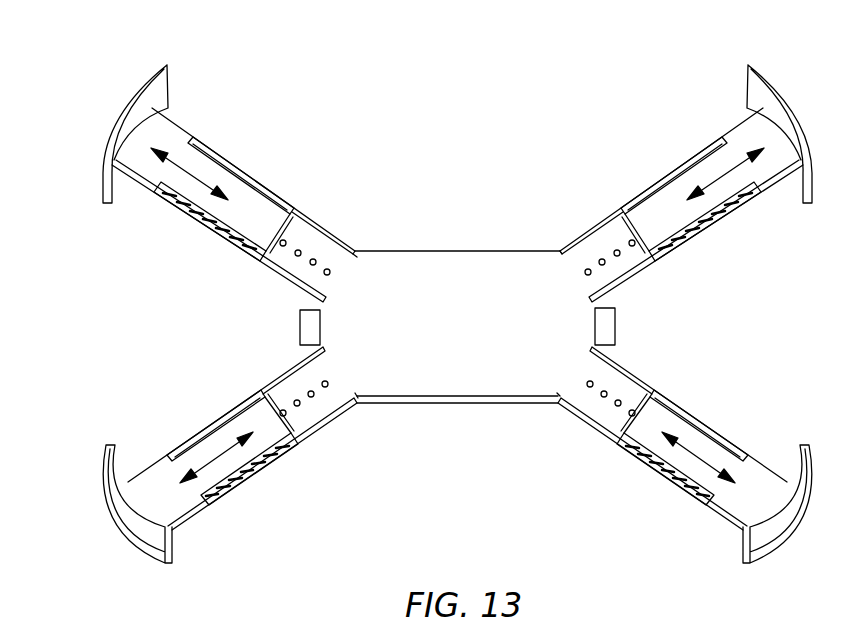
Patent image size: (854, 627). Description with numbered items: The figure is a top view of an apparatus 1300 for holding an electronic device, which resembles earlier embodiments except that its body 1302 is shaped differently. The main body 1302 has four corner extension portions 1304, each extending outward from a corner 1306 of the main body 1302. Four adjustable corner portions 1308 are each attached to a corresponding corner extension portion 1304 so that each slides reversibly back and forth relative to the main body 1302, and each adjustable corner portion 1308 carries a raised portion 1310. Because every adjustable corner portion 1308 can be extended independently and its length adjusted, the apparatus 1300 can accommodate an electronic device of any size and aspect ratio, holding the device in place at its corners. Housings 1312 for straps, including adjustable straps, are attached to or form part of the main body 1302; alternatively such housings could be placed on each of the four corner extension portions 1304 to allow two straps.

The apparatus 1300 is at (608, 82).
The main body 1302 is at (453, 252).
The corner extension portion 1304 is at (258, 187).
The corner 1306 is at (343, 272).
The adjustable corner portion 1308 is at (173, 123).
The raised portion 1310 is at (127, 100).
The housing 1312 is at (617, 323).